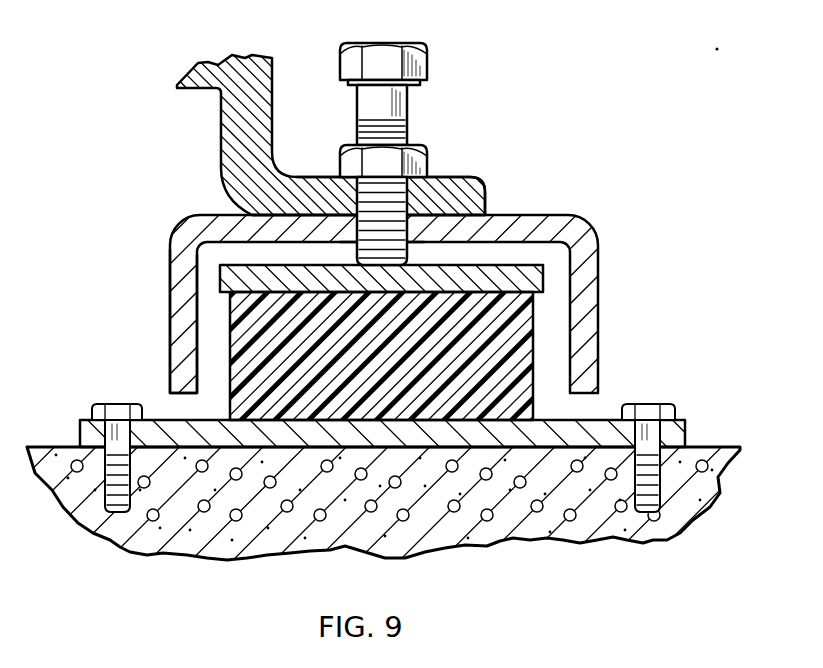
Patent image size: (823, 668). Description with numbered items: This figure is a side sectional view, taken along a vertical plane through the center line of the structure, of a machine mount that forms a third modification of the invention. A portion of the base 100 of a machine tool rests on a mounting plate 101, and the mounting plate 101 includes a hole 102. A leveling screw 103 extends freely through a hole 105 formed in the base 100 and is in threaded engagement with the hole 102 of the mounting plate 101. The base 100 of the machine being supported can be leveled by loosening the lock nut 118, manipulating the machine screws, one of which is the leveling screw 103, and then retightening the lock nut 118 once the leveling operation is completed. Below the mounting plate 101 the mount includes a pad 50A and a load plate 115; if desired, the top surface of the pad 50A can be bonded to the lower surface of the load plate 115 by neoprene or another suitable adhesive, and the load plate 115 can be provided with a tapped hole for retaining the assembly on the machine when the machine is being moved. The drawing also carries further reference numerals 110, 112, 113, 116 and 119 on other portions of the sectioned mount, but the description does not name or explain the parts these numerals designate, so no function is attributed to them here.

The base of machine tool 100 is at (221, 121).
The mounting plate 101 is at (597, 236).
The hole 102 is at (407, 232).
The leveling screw 103 is at (427, 58).
The hole 105 is at (355, 195).
The base plate 110 is at (688, 440).
The concrete foundation 112 is at (676, 507).
The anchor bolts 113 is at (107, 403).
The load plate 115 is at (220, 280).
The threaded end of bolt 116 is at (357, 262).
The lock nut 118 is at (424, 147).
The side wall of channel 119 is at (170, 345).
The pad 50A is at (540, 328).